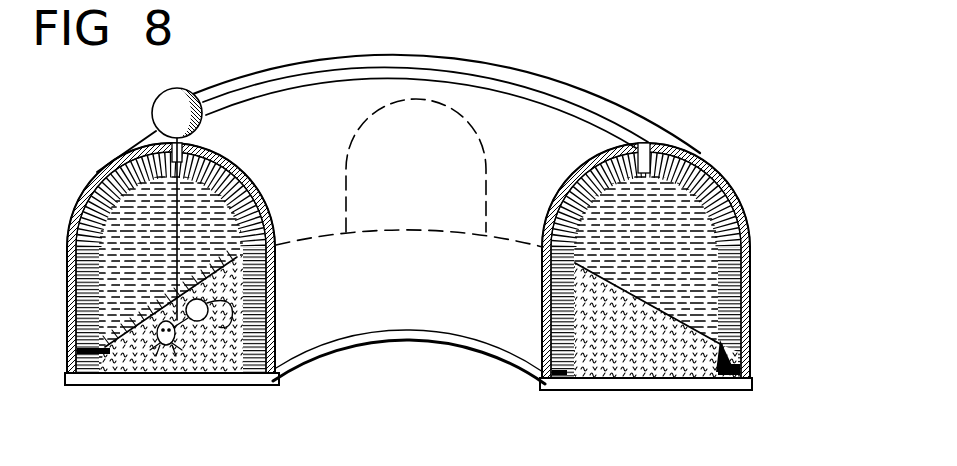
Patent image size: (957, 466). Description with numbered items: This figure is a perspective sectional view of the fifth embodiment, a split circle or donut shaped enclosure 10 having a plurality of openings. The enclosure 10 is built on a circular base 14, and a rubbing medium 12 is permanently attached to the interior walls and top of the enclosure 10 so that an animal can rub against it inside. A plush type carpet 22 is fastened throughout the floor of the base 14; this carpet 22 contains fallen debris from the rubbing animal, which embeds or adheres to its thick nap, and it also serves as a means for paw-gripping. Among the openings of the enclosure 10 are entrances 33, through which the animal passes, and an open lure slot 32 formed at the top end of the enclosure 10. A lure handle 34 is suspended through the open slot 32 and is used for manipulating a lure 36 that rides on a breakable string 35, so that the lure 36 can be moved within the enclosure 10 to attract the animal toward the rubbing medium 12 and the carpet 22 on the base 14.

The enclosure 10 is at (436, 237).
The rubbing medium 12 is at (745, 249).
The circular base 14 is at (693, 382).
The carpet 22 is at (603, 353).
The open lure slot 32 is at (264, 96).
The entrances 33 is at (477, 131).
The lure handle 34 is at (153, 110).
The breakable string 35 is at (181, 290).
The lure 36 is at (190, 318).